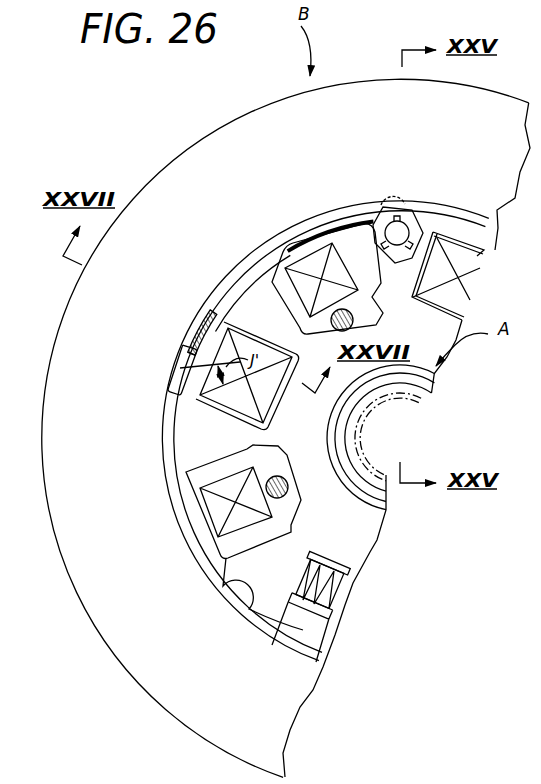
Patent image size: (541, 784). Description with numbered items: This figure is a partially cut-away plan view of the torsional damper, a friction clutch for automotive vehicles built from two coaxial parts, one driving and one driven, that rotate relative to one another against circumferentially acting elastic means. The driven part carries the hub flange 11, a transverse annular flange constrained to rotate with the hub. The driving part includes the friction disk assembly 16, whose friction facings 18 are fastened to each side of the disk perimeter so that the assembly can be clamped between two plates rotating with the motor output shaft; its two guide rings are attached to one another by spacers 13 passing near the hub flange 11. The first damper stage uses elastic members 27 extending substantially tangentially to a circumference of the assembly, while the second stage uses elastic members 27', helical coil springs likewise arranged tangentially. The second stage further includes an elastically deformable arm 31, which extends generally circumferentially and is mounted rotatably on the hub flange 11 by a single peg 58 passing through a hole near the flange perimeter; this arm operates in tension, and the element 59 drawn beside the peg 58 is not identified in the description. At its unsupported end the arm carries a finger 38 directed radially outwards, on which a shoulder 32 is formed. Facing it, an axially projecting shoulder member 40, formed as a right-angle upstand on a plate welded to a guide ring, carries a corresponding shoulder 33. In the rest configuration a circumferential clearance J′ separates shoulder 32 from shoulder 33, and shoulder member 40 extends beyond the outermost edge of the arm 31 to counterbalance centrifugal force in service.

The friction disk assembly 16 is at (189, 141).
The friction facings 18 is at (393, 121).
The elastically deformable arm 31 is at (341, 206).
The hub flange 11 is at (304, 443).
The elastic members 27 is at (325, 437).
The elastic members 27' is at (258, 410).
The spacers 13 is at (330, 321).
The peg 58 is at (398, 217).
The pole boss 59 is at (413, 225).
The shoulder member 40 is at (204, 311).
The shoulder 33 is at (184, 348).
The shoulder 32 is at (178, 368).
The finger 38 is at (172, 379).